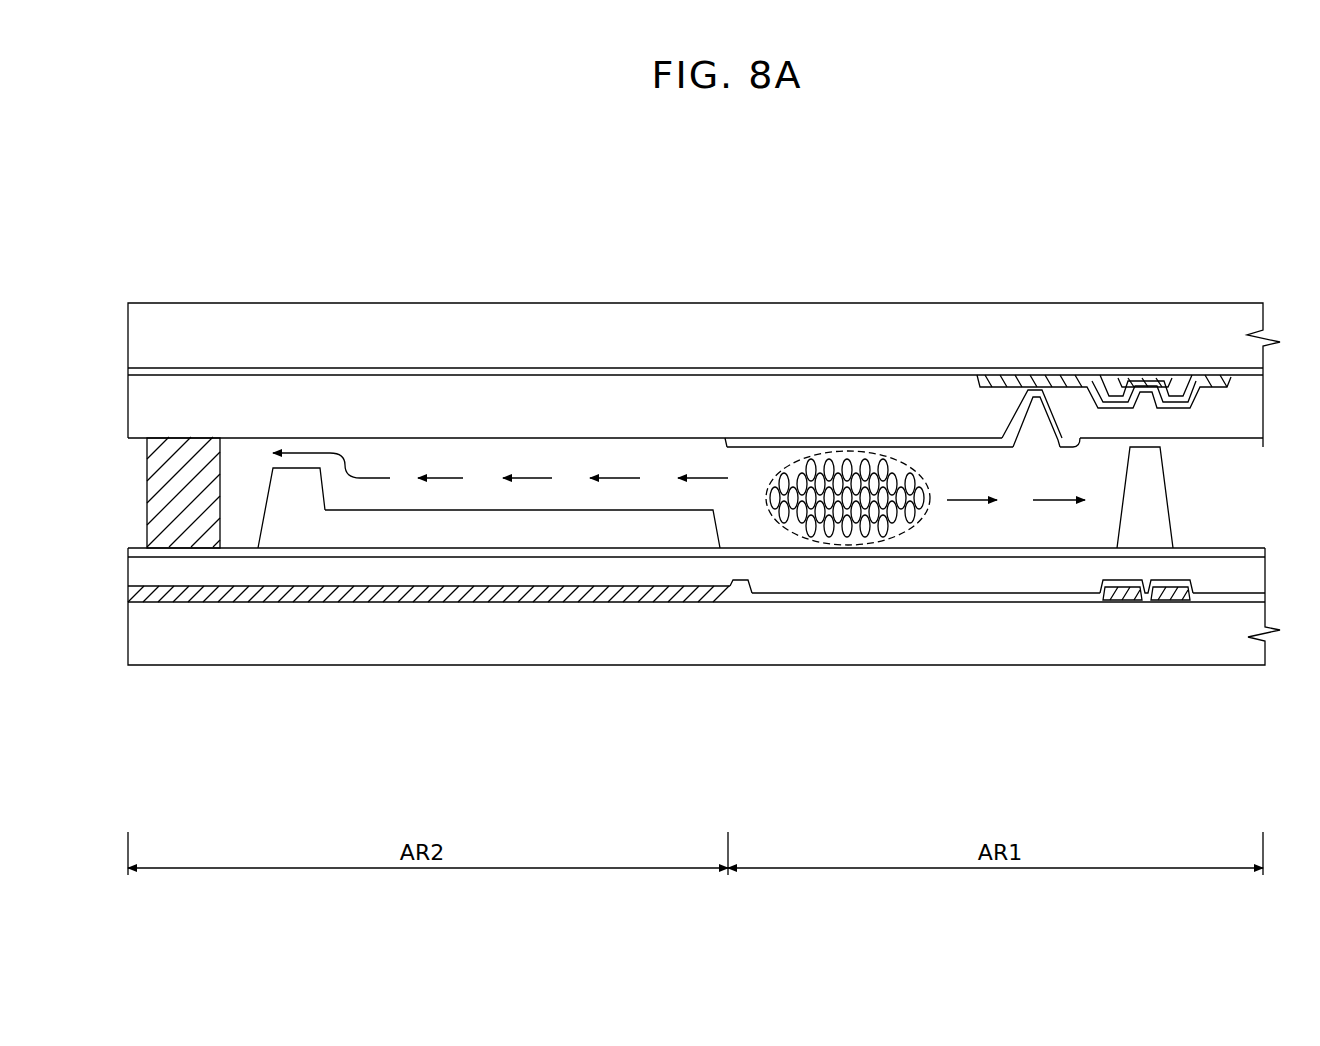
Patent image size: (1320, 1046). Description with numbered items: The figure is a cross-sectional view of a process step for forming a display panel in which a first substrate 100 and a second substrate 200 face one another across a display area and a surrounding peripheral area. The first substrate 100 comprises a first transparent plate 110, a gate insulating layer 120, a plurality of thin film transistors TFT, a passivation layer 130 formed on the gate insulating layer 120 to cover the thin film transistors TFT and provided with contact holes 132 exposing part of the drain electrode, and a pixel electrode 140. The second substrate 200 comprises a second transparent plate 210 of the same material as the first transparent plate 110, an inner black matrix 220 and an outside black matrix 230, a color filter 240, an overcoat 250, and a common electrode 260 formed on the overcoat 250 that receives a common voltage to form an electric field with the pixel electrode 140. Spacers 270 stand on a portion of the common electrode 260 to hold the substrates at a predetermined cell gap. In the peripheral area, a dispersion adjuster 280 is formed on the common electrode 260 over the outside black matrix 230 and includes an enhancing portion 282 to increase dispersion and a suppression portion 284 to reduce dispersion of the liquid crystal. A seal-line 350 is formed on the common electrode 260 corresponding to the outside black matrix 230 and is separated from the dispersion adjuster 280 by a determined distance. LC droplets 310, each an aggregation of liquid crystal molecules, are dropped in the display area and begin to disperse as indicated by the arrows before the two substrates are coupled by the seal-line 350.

The first substrate 100 is at (728, 238).
The first transparent plate 110 is at (734, 332).
The gate insulating layer 120 is at (806, 375).
The passivation layer 130 is at (867, 412).
The pixel electrode 140 is at (930, 437).
The contact hole 132 is at (1034, 416).
The thin film transistor TFT is at (1155, 348).
The seal-line 350 is at (178, 455).
The LC droplet 310 is at (767, 487).
The second substrate 200 is at (1160, 770).
The second transparent plate 210 is at (825, 628).
The inner black matrix 220 is at (1147, 597).
The outside black matrix 230 is at (703, 595).
The color filter 240 is at (888, 598).
The overcoat 250 is at (945, 565).
The common electrode 260 is at (1012, 553).
The spacer 270 is at (1130, 517).
The dispersion adjuster 280 is at (283, 720).
The enhancing portion 282 is at (397, 530).
The suppression portion 284 is at (310, 495).